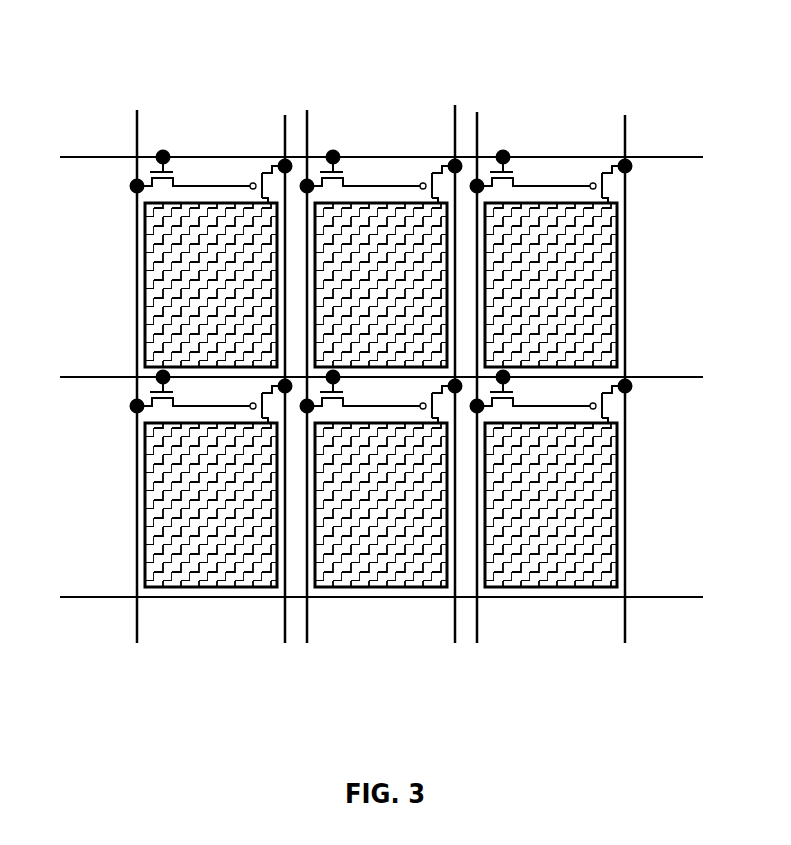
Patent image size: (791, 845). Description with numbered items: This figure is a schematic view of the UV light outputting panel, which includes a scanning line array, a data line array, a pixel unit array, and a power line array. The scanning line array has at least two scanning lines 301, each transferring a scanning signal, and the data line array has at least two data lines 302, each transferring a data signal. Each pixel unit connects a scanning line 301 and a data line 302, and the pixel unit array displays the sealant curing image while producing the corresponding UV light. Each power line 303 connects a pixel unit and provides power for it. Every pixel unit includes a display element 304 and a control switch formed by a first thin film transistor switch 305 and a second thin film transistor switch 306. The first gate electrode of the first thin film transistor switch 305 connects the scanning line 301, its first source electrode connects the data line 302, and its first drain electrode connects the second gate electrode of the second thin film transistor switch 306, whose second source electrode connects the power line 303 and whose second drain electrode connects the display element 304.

The scanning line 301 is at (85, 157).
The data line 302 is at (137, 110).
The power line 303 is at (285, 115).
The display element 304 is at (280, 238).
The first thin film transistor switch 305 is at (182, 171).
The second thin film transistor switch 306 is at (257, 160).